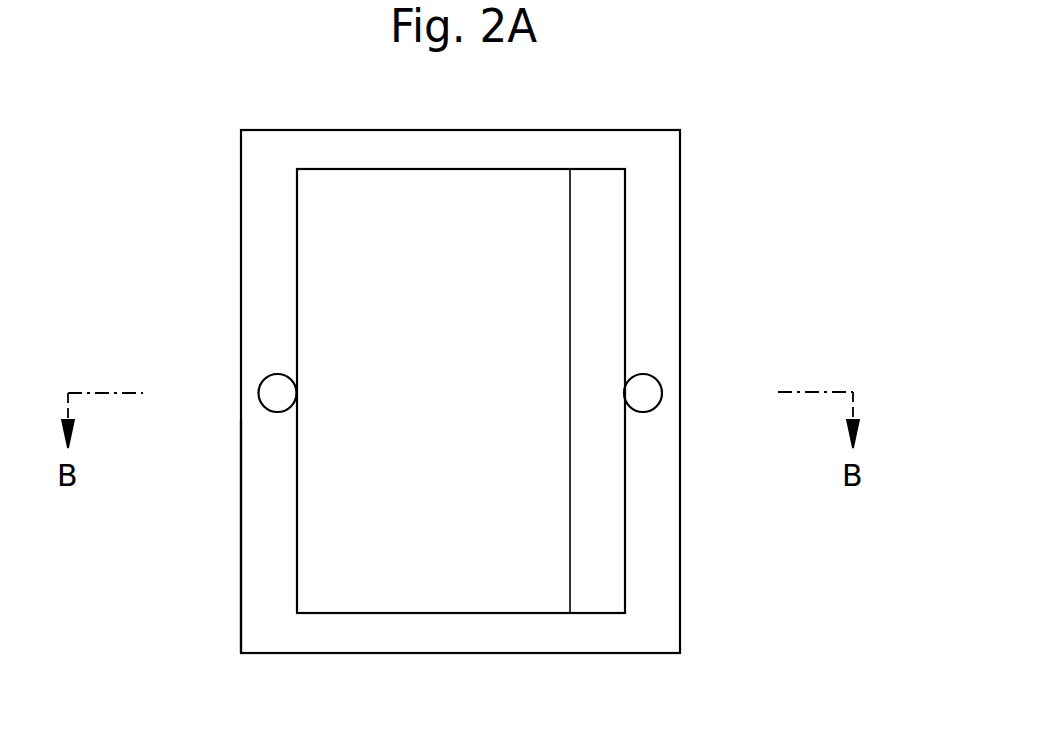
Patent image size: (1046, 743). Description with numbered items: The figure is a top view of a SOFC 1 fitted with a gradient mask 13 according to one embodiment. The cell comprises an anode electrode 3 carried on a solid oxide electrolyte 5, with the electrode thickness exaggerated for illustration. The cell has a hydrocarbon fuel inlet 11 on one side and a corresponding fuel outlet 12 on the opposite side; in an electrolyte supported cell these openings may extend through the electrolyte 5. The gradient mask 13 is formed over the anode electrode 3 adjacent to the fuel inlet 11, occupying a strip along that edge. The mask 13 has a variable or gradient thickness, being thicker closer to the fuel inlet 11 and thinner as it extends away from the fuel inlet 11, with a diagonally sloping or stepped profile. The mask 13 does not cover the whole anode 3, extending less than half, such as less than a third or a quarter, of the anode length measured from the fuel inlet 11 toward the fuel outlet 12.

The SOFC 1 is at (745, 130).
The anode electrode 3 is at (297, 316).
The solid oxide electrolyte 5 is at (241, 495).
The fuel inlet 11 is at (662, 393).
The fuel outlet 12 is at (258, 394).
The gradient mask 13 is at (592, 504).